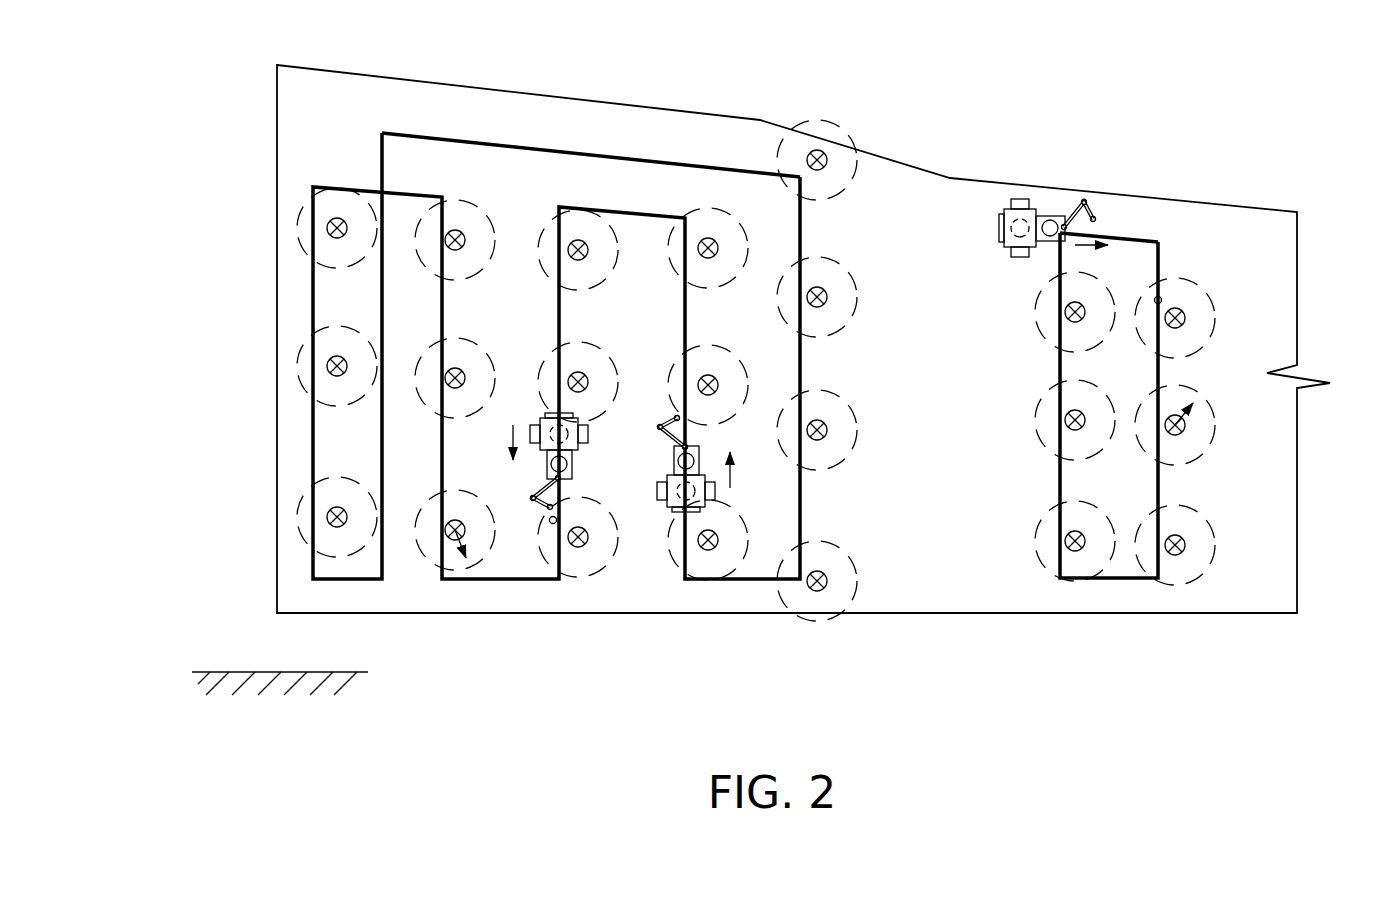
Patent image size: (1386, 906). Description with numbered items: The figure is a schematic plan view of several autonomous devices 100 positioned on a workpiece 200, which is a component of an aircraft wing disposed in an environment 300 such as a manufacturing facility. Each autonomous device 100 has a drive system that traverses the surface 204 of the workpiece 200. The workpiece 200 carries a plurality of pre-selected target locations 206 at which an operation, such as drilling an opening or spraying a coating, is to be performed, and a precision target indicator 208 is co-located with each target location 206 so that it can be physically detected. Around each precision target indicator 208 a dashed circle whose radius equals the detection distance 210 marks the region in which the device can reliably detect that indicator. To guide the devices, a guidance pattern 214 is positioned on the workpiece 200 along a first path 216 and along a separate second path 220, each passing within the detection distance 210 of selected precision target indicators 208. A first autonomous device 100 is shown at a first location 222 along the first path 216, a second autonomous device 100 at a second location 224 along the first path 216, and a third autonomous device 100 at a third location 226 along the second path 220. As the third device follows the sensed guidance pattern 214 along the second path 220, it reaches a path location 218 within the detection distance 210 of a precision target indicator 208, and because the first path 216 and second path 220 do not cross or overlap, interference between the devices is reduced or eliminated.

The autonomous device 100 is at (582, 450).
The workpiece 200 is at (1213, 613).
The surface 204 is at (911, 394).
The target location 206 is at (805, 291).
The precision target indicator 208 is at (688, 230).
The detection distance 210 is at (1205, 412).
The guidance pattern 214 is at (543, 152).
The first path 216 is at (599, 146).
The path location 218 is at (550, 524).
The second path 220 is at (1139, 230).
The first location 222 is at (530, 402).
The second location 224 is at (730, 500).
The third location 226 is at (1001, 198).
The environment 300 is at (238, 672).